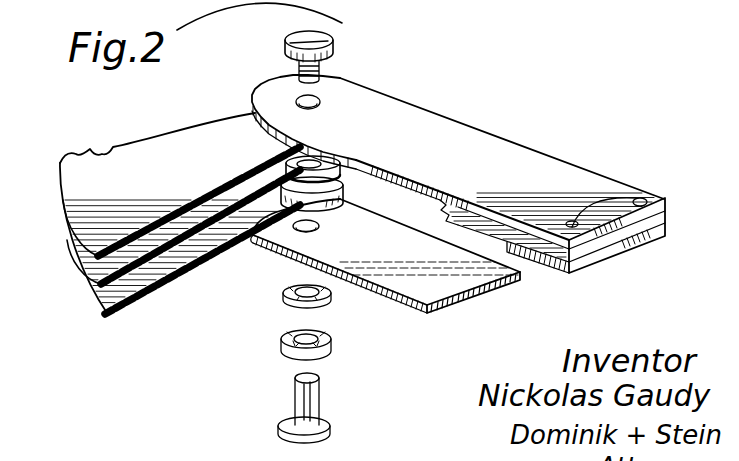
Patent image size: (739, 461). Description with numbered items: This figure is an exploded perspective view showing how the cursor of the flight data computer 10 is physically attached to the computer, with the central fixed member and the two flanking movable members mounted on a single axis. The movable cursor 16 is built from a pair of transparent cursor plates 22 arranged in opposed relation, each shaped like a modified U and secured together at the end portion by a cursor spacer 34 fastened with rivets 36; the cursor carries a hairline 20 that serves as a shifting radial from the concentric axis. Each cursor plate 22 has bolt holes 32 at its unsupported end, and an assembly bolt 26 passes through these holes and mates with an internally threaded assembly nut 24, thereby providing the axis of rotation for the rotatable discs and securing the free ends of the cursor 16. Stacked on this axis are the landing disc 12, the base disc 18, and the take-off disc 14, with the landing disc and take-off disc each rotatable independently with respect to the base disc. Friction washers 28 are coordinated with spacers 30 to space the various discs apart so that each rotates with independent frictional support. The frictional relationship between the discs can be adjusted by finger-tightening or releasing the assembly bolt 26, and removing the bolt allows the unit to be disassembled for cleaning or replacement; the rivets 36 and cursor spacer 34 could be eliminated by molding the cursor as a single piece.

The flight data computer 10 is at (77, 290).
The landing disc 12 is at (170, 152).
The take-off disc 14 is at (163, 283).
The movable cursor 16 is at (606, 153).
The base disc 18 is at (197, 228).
The hairline 20 is at (457, 152).
The transparent cursor plates 22 is at (515, 153).
The assembly nut 24 is at (320, 400).
The assembly bolt 26 is at (290, 33).
The friction washers 28 is at (283, 348).
The spacers 30 is at (343, 180).
The bolt holes 32 is at (316, 94).
The cursor spacer 34 is at (664, 217).
The rivets 36 is at (641, 199).